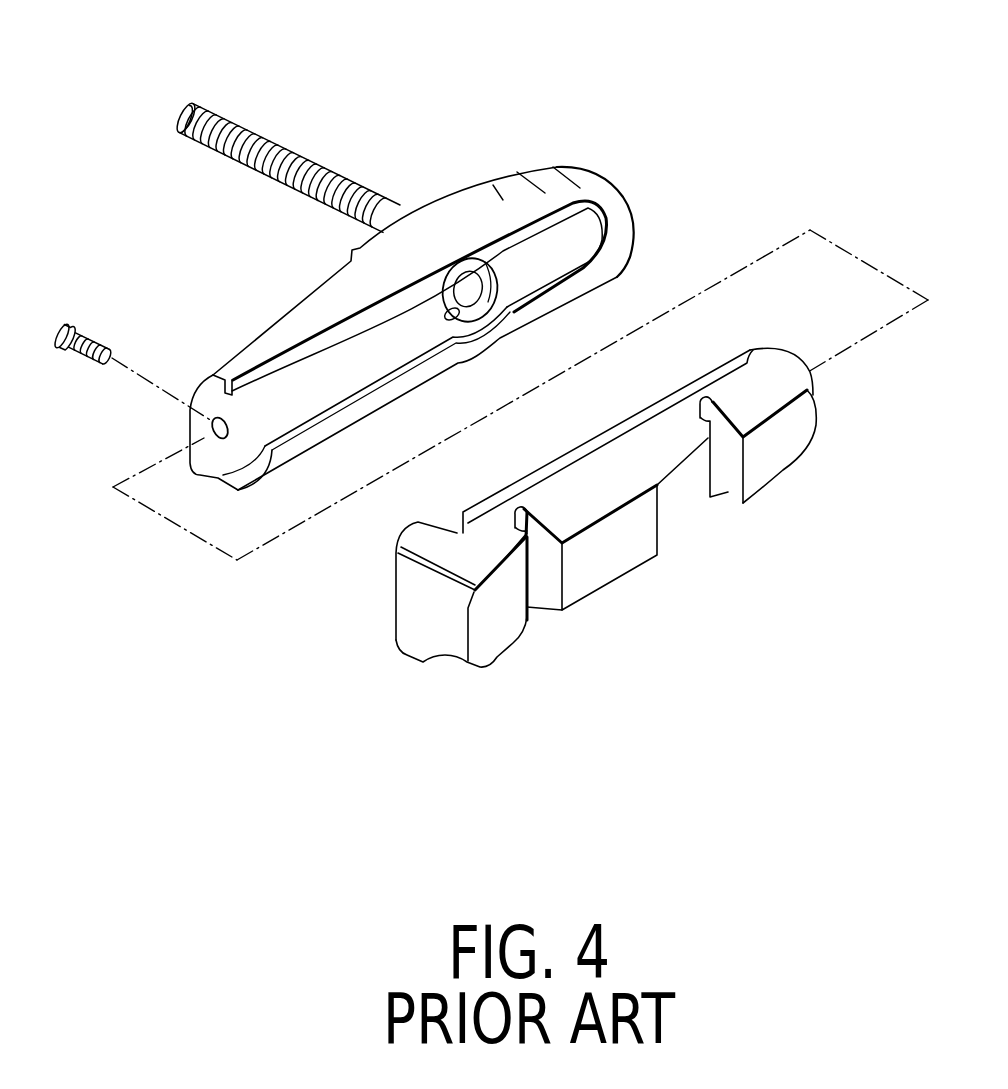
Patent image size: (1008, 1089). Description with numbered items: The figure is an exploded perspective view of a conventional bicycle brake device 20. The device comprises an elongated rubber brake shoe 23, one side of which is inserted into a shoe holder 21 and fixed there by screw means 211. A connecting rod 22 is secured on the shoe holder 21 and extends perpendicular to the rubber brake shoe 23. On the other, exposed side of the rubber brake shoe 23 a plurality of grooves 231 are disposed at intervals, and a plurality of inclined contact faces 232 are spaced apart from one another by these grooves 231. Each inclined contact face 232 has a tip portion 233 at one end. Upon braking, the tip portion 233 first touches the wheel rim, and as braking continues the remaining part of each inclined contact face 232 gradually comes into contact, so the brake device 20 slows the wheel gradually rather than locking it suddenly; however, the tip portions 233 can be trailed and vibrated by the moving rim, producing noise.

The brake device 20 is at (473, 285).
The shoe holder 21 is at (633, 227).
The connecting rod 22 is at (273, 148).
The screw means 211 is at (86, 363).
The rubber brake shoe 23 is at (545, 569).
The grooves 231 is at (533, 533).
The inclined contact faces 232 is at (587, 573).
The tip portion 233 is at (718, 494).